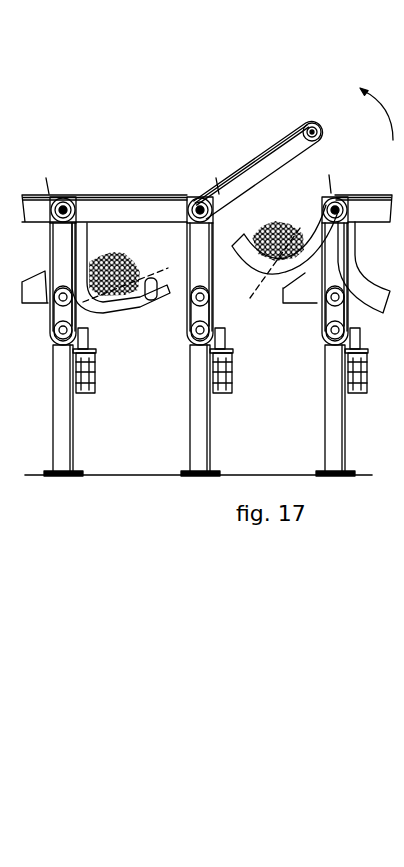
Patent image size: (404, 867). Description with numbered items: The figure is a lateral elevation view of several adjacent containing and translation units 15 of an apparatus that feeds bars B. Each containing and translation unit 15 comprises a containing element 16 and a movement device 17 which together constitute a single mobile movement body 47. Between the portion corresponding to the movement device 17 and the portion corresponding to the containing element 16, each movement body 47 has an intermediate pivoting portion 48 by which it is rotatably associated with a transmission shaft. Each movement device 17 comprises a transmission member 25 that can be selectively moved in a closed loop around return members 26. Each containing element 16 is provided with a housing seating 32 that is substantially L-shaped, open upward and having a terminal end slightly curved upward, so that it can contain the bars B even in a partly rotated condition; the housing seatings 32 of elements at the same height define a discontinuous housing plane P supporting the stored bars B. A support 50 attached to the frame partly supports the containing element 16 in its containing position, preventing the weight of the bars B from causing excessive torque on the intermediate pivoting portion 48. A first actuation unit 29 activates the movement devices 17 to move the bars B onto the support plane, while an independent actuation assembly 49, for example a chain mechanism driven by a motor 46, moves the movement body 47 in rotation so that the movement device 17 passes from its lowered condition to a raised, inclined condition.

The containing and translation unit 15 is at (147, 417).
The containing element 16 is at (88, 226).
The movement device 17 is at (117, 206).
The transmission member 25 is at (137, 194).
The return member 26 is at (315, 122).
The first actuation unit 29 is at (178, 320).
The housing seating 32 is at (118, 306).
The motor 46 is at (229, 383).
The movement body 47 is at (107, 193).
The intermediate pivoting portion 48 is at (80, 197).
The actuation assembly 49 is at (191, 349).
The support 50 is at (41, 292).
The bars B is at (141, 268).
The housing plane P is at (88, 306).